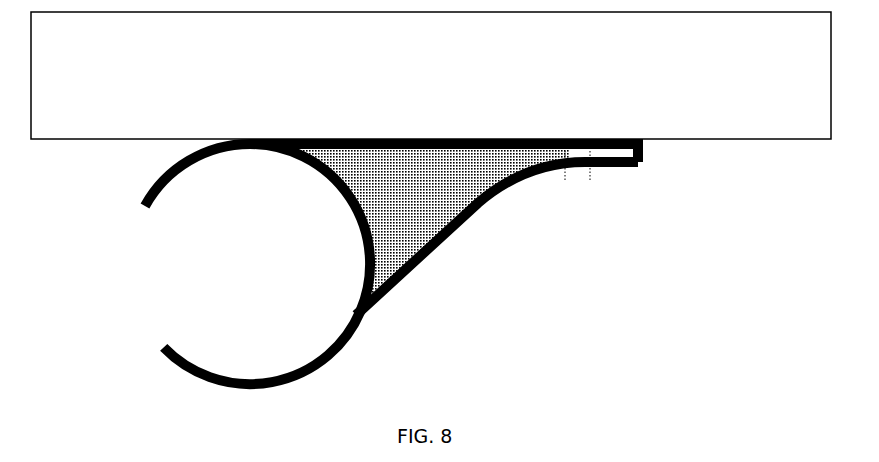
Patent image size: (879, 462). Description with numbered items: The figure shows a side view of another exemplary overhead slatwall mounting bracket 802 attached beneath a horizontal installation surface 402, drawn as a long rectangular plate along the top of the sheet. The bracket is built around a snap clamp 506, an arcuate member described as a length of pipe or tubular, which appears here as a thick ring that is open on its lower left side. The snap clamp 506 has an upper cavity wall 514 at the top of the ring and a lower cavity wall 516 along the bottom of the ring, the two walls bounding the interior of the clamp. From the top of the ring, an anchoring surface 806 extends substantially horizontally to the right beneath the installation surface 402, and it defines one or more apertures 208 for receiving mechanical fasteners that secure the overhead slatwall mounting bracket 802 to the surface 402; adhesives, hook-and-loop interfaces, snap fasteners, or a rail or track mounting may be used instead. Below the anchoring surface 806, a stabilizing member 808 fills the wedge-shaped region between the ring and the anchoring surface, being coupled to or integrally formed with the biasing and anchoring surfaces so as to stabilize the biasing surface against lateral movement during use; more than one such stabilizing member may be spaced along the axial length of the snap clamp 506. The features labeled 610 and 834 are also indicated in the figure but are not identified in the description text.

The horizontal installation surface 402 is at (420, 86).
The snap clamp 506 is at (353, 257).
The upper cavity wall 514 is at (257, 150).
The lower cavity wall 516 is at (235, 370).
The opening between arms 610 is at (163, 342).
The inner wall of ring portion 834 is at (366, 194).
The anchoring surface 806 is at (478, 138).
The stabilizing member 808 is at (447, 191).
The overhead slatwall mounting bracket 802 is at (434, 255).
The apertures 208 is at (592, 174).